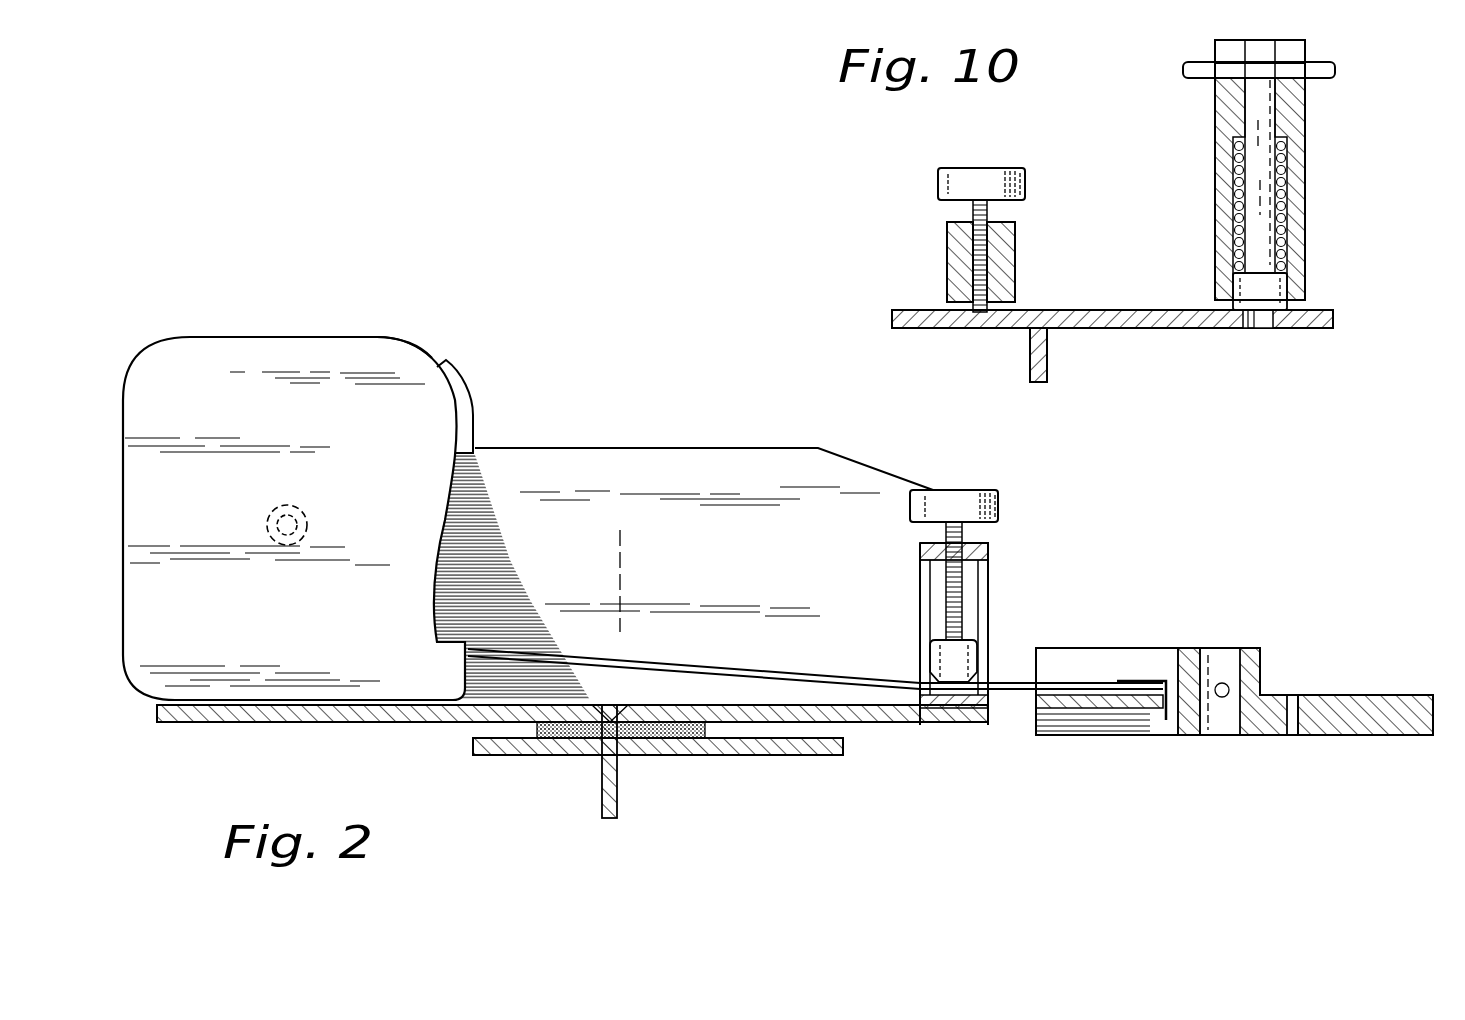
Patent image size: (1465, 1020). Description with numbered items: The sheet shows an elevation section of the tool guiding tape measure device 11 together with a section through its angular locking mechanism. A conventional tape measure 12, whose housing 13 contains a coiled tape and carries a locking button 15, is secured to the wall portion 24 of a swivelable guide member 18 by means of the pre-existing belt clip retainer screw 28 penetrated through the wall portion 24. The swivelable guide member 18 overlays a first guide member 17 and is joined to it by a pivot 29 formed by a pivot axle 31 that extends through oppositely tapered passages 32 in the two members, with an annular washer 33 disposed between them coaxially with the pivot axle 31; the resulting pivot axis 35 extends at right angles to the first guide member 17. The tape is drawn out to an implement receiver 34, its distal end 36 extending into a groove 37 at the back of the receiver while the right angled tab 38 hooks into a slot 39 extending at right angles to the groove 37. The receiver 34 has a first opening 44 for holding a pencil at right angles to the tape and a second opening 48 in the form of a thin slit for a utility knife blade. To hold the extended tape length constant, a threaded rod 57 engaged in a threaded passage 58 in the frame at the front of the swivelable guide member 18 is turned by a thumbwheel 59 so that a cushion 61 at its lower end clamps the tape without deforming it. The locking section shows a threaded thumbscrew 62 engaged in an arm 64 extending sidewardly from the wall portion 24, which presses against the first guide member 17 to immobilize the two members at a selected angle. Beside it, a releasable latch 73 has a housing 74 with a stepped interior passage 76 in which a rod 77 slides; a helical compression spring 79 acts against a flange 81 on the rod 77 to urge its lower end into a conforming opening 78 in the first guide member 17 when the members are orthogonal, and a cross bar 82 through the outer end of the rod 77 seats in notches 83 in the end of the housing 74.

In FIG. 2, the tool guiding tape measure device 11 is at (1280, 463).
In FIG. 2, the tape measure 12 is at (330, 303).
In FIG. 2, the housing 13 is at (410, 350).
In FIG. 2, the locking button 15 is at (456, 376).
In FIG. 2, the first guide member 17 is at (770, 757).
In FIG. 10, the first guide member 17 is at (1078, 329).
In FIG. 2, the swivelable guide member 18 is at (266, 726).
In FIG. 2, the wall portion 24 is at (718, 447).
In FIG. 2, the belt clip retainer screw 28 is at (292, 506).
In FIG. 2, the pivot 29 is at (628, 760).
In FIG. 2, the pivot axle 31 is at (605, 705).
In FIG. 2, the tapered passages 32 is at (624, 710).
In FIG. 2, the annular washer 33 is at (533, 754).
In FIG. 2, the implement receiver 34 is at (1279, 645).
In FIG. 2, the pivot axis 35 is at (625, 580).
In FIG. 2, the distal end 36 is at (1137, 662).
In FIG. 2, the groove 37 is at (1052, 670).
In FIG. 2, the right angled tab 38 is at (1170, 700).
In FIG. 2, the slot 39 is at (1172, 732).
In FIG. 2, the first opening 44 is at (1232, 722).
In FIG. 2, the second opening 48 is at (1283, 707).
In FIG. 2, the threaded rod 57 is at (947, 608).
In FIG. 2, the threaded passage 58 is at (945, 566).
In FIG. 2, the thumbwheel 59 is at (957, 490).
In FIG. 2, the cushion 61 is at (932, 660).
In FIG. 10, the threaded thumbscrew 62 is at (1012, 168).
In FIG. 10, the arm 64 is at (947, 256).
In FIG. 10, the releasable latch 73 is at (1350, 176).
In FIG. 10, the housing 74 is at (1215, 182).
In FIG. 10, the stepped interior passage 76 is at (1270, 97).
In FIG. 10, the rod 77 is at (1260, 232).
In FIG. 10, the opening 78 is at (1250, 328).
In FIG. 10, the helical compression spring 79 is at (1283, 208).
In FIG. 10, the flange 81 is at (1285, 286).
In FIG. 10, the cross bar 82 is at (1318, 63).
In FIG. 10, the notches 83 is at (1212, 68).